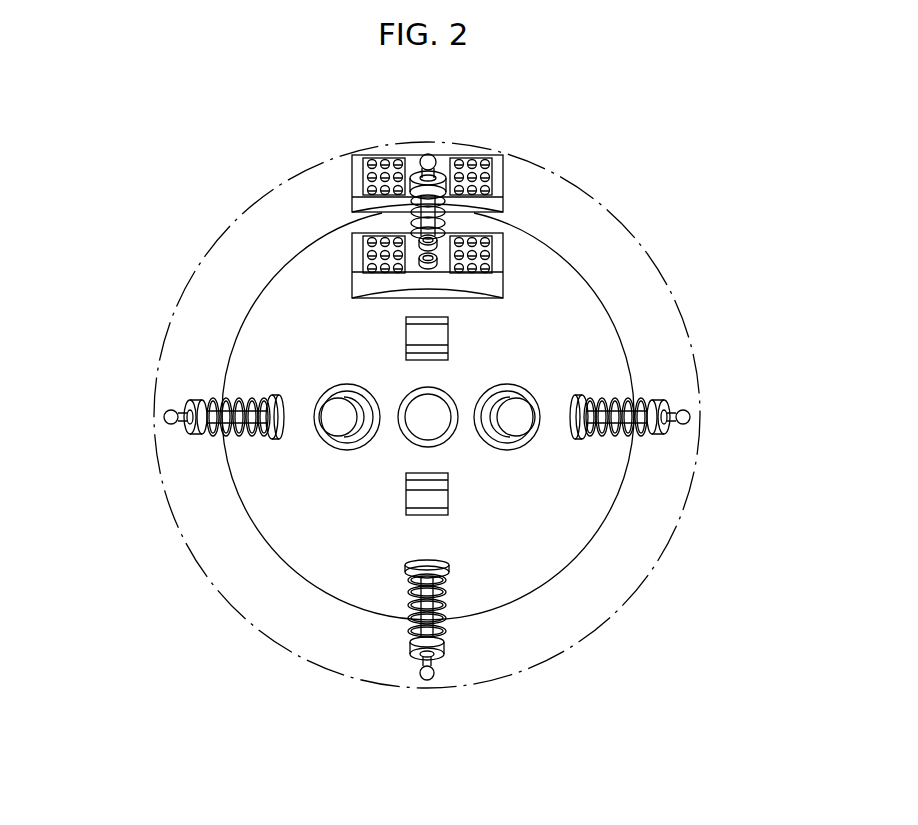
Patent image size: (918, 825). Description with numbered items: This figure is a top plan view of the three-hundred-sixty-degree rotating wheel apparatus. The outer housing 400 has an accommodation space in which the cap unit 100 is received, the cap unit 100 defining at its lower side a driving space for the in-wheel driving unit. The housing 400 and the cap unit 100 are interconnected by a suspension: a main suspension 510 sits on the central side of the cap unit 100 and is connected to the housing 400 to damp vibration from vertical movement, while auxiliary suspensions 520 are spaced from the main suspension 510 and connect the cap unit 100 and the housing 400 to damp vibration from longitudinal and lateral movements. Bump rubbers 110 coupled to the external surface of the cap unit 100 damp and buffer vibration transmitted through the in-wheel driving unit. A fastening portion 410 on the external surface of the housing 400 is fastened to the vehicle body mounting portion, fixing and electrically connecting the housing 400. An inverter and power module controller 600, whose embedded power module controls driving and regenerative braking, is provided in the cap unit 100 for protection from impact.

The cap unit 100 is at (584, 583).
The bump rubber 110 is at (340, 398).
The housing 400 is at (621, 203).
The fastening portion 410 is at (358, 255).
The main suspension 510 is at (405, 430).
The auxiliary suspension 520 is at (176, 428).
The inverter and power module controller 600 is at (437, 497).